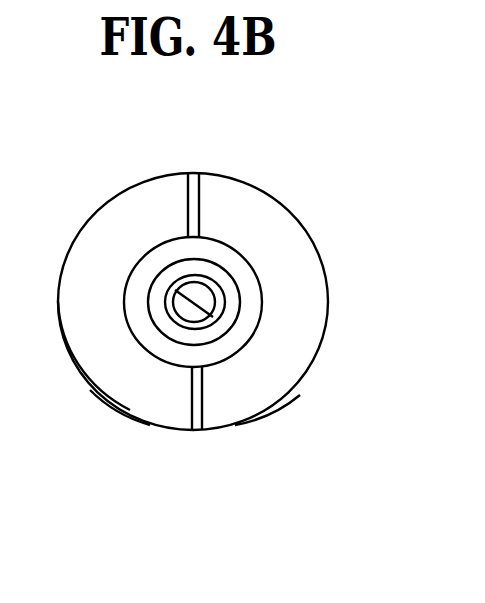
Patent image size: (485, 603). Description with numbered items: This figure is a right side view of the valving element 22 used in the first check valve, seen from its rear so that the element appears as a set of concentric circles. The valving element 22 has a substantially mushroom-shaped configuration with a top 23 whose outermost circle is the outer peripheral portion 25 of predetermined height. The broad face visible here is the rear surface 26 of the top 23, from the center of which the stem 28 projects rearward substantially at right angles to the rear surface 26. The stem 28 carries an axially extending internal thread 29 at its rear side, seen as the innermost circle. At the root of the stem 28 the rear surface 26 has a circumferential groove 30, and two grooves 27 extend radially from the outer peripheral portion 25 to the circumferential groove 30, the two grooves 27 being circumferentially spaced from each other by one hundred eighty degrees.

The valving element 22 is at (245, 175).
The top 23 is at (92, 345).
The outer peripheral portion 25 is at (115, 407).
The rear surface 26 is at (248, 400).
The grooves 27 is at (192, 197).
The stem 28 is at (213, 282).
The internal thread 29 is at (213, 317).
The circumferential groove 30 is at (222, 256).